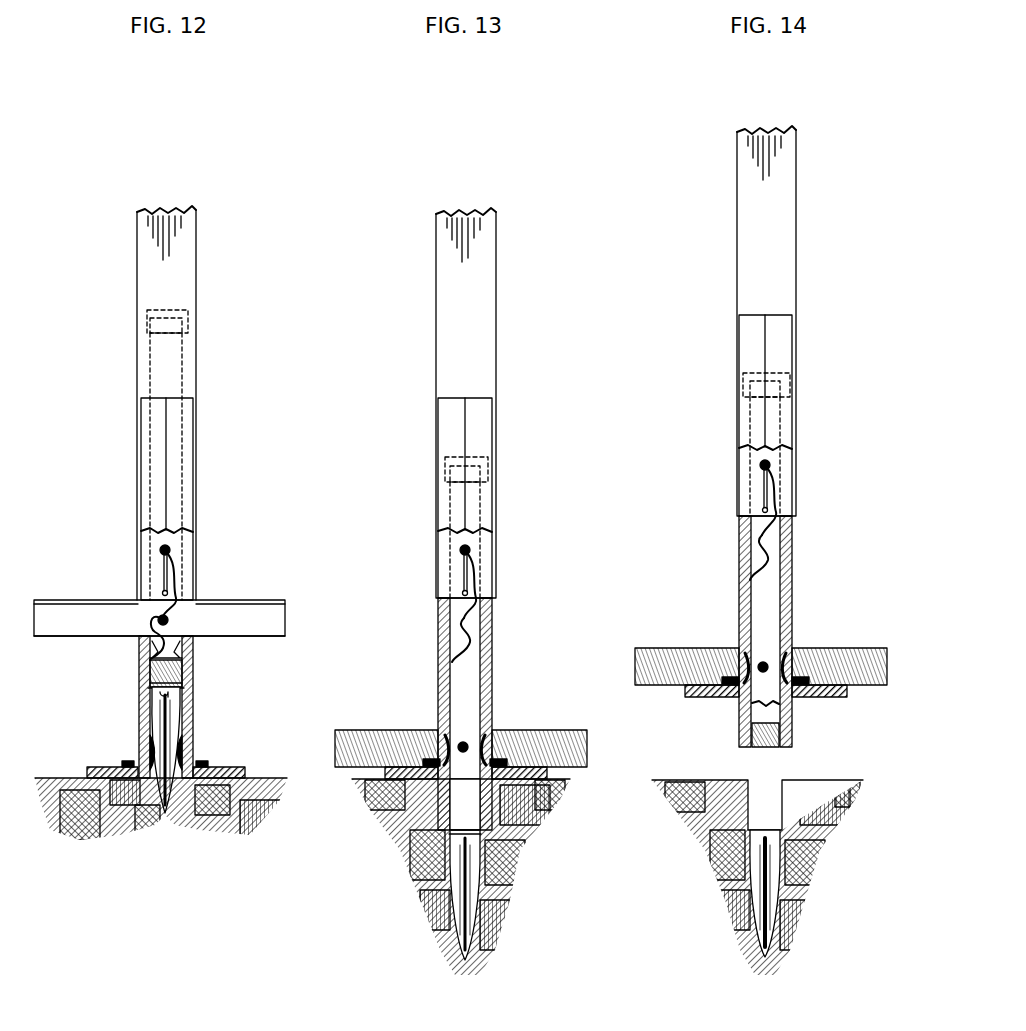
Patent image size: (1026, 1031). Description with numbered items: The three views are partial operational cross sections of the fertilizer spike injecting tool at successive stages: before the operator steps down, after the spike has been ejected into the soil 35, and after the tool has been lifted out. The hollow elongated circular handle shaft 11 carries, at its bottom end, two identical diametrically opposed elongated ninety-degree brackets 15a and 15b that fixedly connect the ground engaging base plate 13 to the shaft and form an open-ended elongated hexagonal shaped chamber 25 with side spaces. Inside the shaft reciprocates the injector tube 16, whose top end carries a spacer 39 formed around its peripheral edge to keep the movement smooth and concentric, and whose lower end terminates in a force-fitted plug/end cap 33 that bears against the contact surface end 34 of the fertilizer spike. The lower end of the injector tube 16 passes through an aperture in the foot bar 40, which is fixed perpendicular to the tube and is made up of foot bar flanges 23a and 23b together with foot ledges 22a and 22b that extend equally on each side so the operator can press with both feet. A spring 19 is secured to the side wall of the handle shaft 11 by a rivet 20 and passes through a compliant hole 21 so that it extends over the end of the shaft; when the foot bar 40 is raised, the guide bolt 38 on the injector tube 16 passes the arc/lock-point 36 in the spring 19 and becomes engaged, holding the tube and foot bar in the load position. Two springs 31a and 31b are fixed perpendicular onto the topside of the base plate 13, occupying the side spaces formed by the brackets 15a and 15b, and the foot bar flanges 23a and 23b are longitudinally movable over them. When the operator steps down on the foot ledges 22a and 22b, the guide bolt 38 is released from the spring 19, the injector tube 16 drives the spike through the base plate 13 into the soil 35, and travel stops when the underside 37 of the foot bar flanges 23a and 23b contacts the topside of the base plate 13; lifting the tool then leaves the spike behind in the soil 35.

In FIG. 12, the handle shaft 11 is at (137, 228).
In FIG. 13, the handle shaft 11 is at (436, 228).
In FIG. 14, the handle shaft 11 is at (737, 143).
In FIG. 12, the base plate 13 is at (74, 776).
In FIG. 13, the base plate 13 is at (383, 772).
In FIG. 14, the base plate 13 is at (683, 690).
In FIG. 12, the elongated 90° bracket 15a is at (139, 410).
In FIG. 13, the elongated 90° bracket 15a is at (438, 410).
In FIG. 14, the elongated 90° bracket 15a is at (739, 327).
In FIG. 12, the elongated 90° bracket 15b is at (139, 745).
In FIG. 13, the elongated 90° bracket 15b is at (438, 640).
In FIG. 14, the elongated 90° bracket 15b is at (739, 593).
In FIG. 12, the injector tube 16 is at (150, 377).
In FIG. 13, the injector tube 16 is at (448, 513).
In FIG. 14, the injector tube 16 is at (750, 432).
In FIG. 12, the spring 19 is at (182, 565).
In FIG. 13, the spring 19 is at (485, 565).
In FIG. 14, the spring 19 is at (785, 482).
In FIG. 12, the rivet 20 is at (180, 534).
In FIG. 13, the rivet 20 is at (485, 535).
In FIG. 14, the rivet 20 is at (785, 452).
In FIG. 12, the compliant hole 21 is at (160, 592).
In FIG. 13, the compliant hole 21 is at (462, 592).
In FIG. 14, the compliant hole 21 is at (762, 509).
In FIG. 12, the foot ledge 22a is at (72, 592).
In FIG. 13, the foot ledge 22a is at (385, 728).
In FIG. 12, the foot ledge 22b is at (257, 592).
In FIG. 13, the foot ledge 22b is at (548, 728).
In FIG. 12, the foot bar flange 23a is at (58, 612).
In FIG. 13, the foot bar flange 23a is at (360, 740).
In FIG. 12, the foot bar flange 23b is at (272, 612).
In FIG. 13, the foot bar flange 23b is at (560, 740).
In FIG. 12, the hexagonal shaped chamber 25 is at (150, 697).
In FIG. 13, the hexagonal shaped chamber 25 is at (465, 895).
In FIG. 14, the hexagonal shaped chamber 25 is at (765, 893).
In FIG. 12, the spring 31a is at (150, 722).
In FIG. 14, the spring 31a is at (745, 655).
In FIG. 12, the spring 31b is at (182, 722).
In FIG. 14, the spring 31b is at (790, 655).
In FIG. 12, the plug/end cap 33 is at (150, 682).
In FIG. 13, the plug/end cap 33 is at (435, 818).
In FIG. 12, the contact surface end 34 is at (185, 705).
In FIG. 12, the soil 35 is at (100, 818).
In FIG. 13, the soil 35 is at (518, 840).
In FIG. 14, the soil 35 is at (820, 842).
In FIG. 12, the arc/lock-point 36 is at (195, 640).
In FIG. 13, the arc/lock-point 36 is at (492, 628).
In FIG. 14, the arc/lock-point 36 is at (792, 533).
In FIG. 12, the underside 37 is at (64, 642).
In FIG. 12, the guide bolt 38 is at (166, 618).
In FIG. 12, the spacer 39 is at (137, 326).
In FIG. 13, the spacer 39 is at (438, 473).
In FIG. 14, the spacer 39 is at (739, 390).
In FIG. 12, the foot bar 40 is at (290, 613).